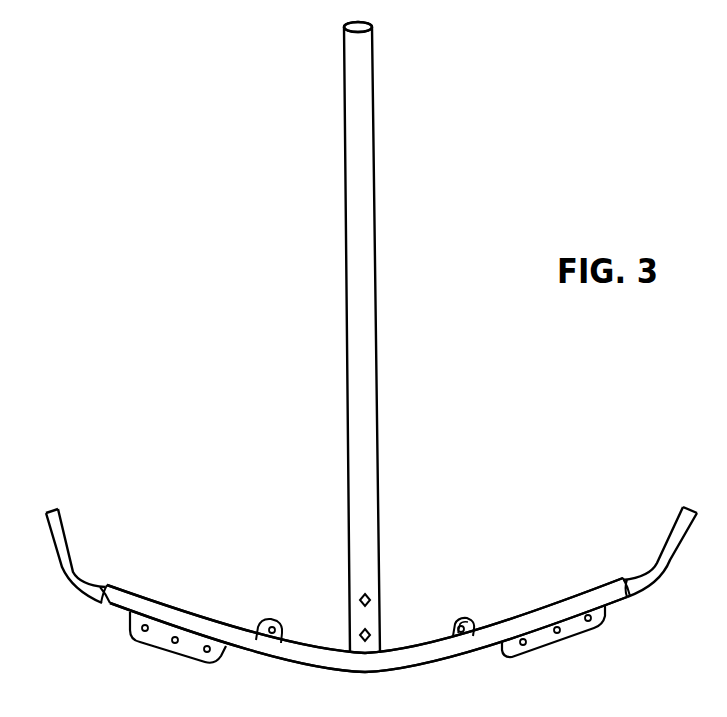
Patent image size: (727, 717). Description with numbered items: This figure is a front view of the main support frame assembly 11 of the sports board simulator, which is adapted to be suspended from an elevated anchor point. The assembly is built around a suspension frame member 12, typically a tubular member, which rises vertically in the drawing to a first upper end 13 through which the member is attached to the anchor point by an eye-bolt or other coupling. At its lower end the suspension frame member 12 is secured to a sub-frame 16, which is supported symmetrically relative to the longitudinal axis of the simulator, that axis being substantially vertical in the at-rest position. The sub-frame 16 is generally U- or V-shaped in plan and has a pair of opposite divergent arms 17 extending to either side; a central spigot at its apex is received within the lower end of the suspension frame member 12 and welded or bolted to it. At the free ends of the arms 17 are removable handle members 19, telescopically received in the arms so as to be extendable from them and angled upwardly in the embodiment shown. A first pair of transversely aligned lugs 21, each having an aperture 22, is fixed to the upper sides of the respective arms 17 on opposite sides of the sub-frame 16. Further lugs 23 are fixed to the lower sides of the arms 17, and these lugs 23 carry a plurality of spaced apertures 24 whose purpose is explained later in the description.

The main support frame assembly 11 is at (268, 228).
The suspension frame member 12 is at (373, 153).
The first upper end 13 is at (342, 28).
The sub-frame 16 is at (189, 597).
The divergent arms 17 is at (150, 597).
The handle members 19 is at (73, 557).
The lugs 21 is at (267, 618).
The apertures 22 is at (280, 626).
The further lugs 23 is at (228, 650).
The spaced apertures 24 is at (174, 645).